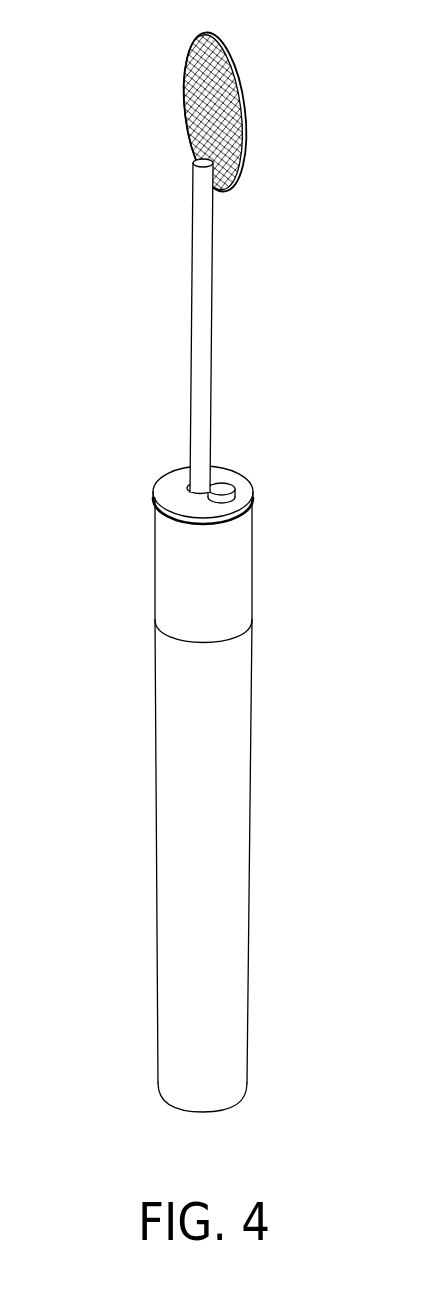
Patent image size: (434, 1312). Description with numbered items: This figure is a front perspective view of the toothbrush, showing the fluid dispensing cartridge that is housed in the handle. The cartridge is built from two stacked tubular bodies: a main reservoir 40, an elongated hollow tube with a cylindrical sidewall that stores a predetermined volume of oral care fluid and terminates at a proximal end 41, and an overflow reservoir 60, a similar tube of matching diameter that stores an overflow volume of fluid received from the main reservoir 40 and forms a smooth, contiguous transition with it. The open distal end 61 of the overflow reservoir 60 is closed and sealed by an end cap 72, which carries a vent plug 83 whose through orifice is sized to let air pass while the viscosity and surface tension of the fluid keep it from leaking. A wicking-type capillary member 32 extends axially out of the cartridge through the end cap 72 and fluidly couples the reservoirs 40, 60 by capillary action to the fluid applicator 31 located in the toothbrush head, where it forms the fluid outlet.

The fluid applicator 31 is at (227, 83).
The capillary member 32 is at (213, 269).
The main reservoir 40 is at (233, 773).
The proximal end 41 is at (177, 1112).
The overflow reservoir 60 is at (234, 583).
The distal end 61 is at (153, 459).
The end cap 72 is at (175, 492).
The vent plug 83 is at (221, 488).